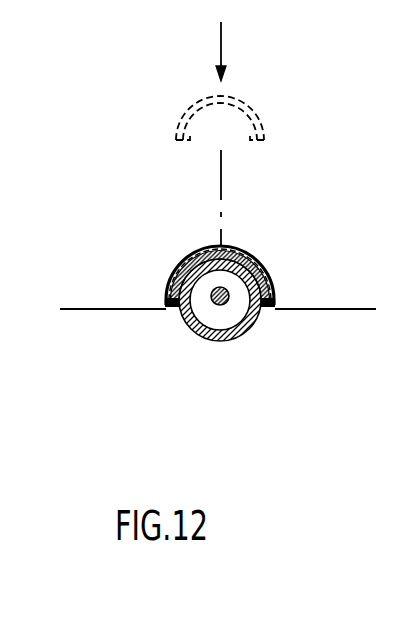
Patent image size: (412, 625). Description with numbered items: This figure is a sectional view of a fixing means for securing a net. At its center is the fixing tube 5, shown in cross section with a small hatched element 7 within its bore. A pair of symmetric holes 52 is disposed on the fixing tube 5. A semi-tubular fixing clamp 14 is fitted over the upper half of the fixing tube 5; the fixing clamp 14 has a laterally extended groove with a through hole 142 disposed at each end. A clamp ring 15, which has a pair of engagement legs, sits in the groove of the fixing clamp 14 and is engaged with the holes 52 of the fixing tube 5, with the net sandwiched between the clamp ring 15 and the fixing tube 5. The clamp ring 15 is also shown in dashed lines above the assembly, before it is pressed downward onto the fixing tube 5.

The fixing tube 5 is at (187, 323).
The wire 7 is at (218, 304).
The semi-tubular fixing clamp 14 is at (182, 270).
The clamp ring 15 is at (253, 107).
The through hole 142 is at (270, 300).
The symmetric holes 52 is at (258, 314).